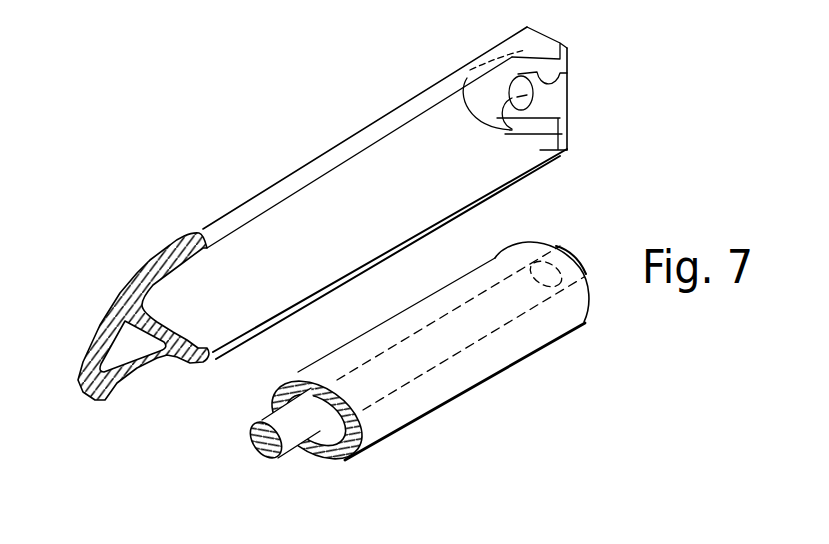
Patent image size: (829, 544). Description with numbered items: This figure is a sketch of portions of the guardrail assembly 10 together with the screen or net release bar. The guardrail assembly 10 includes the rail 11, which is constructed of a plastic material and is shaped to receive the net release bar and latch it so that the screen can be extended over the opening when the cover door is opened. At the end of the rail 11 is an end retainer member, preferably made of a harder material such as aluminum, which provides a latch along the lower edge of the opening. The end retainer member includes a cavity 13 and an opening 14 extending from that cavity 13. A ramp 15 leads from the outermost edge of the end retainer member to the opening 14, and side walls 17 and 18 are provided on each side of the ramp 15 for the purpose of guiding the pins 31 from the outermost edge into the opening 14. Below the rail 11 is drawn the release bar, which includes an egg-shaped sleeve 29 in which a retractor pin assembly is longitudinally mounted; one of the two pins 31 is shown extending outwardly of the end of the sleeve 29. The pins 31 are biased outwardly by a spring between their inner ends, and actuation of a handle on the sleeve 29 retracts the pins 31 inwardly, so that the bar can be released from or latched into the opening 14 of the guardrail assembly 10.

The guardrail assembly 10 is at (346, 200).
The rail 11 is at (239, 214).
The cavity 13 is at (443, 137).
The opening 14 is at (500, 138).
The ramp 15 is at (548, 99).
The side wall 17 is at (566, 111).
The side wall 18 is at (569, 50).
The egg-shaped sleeve 29 is at (462, 375).
The pin 31 is at (578, 247).